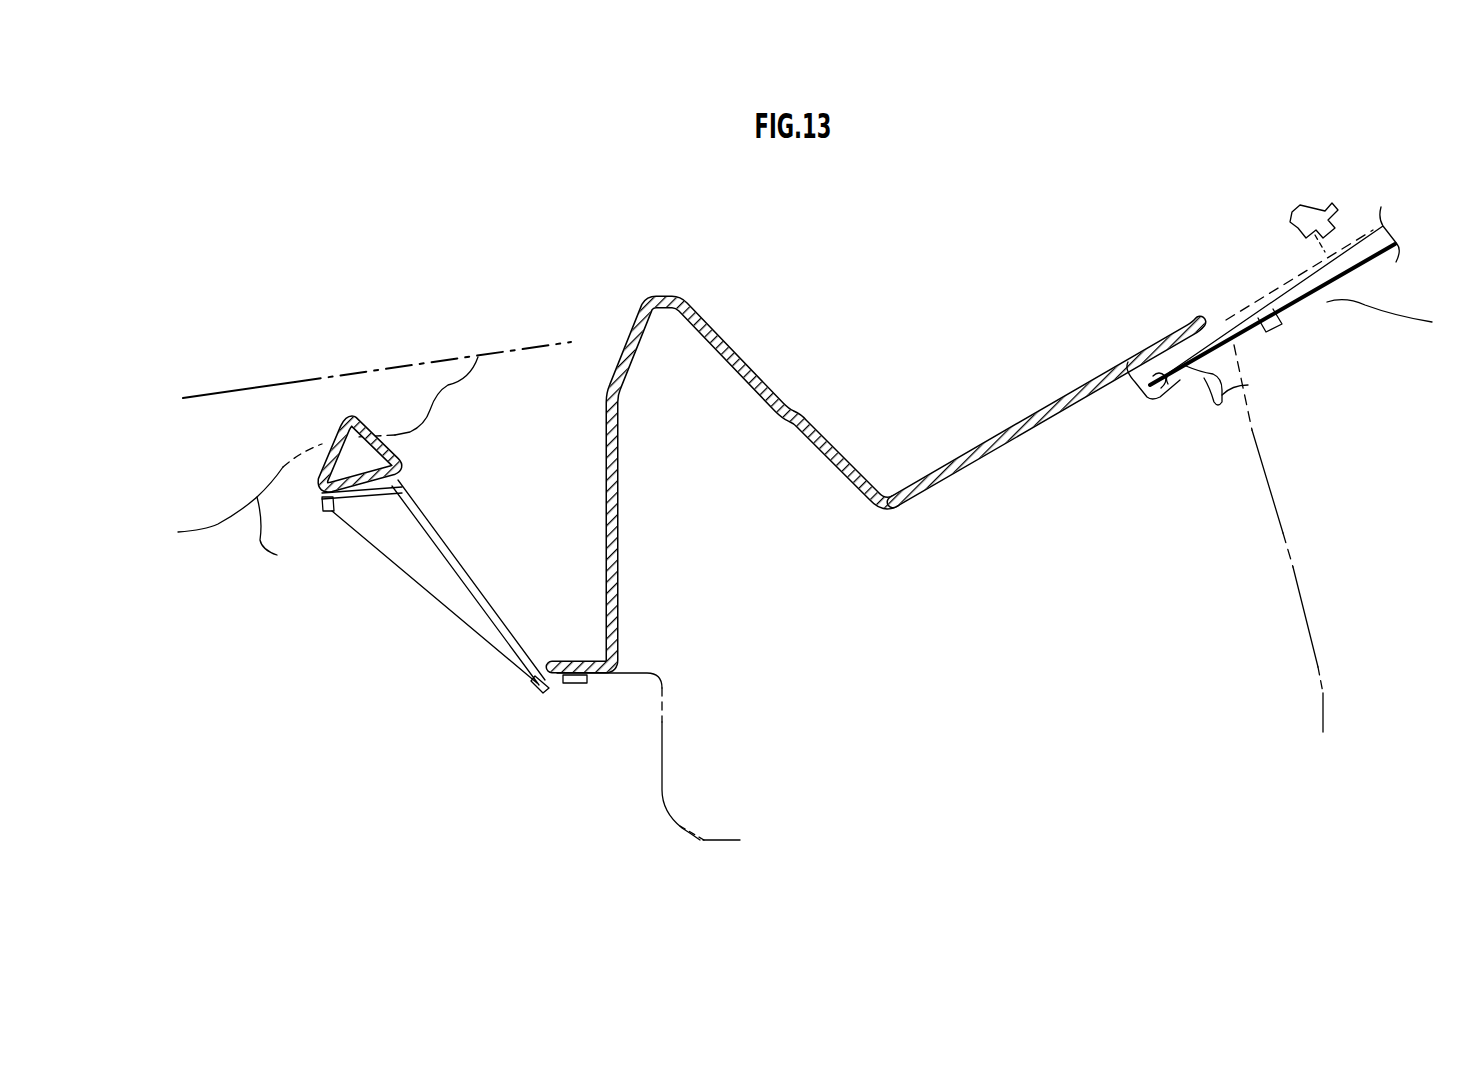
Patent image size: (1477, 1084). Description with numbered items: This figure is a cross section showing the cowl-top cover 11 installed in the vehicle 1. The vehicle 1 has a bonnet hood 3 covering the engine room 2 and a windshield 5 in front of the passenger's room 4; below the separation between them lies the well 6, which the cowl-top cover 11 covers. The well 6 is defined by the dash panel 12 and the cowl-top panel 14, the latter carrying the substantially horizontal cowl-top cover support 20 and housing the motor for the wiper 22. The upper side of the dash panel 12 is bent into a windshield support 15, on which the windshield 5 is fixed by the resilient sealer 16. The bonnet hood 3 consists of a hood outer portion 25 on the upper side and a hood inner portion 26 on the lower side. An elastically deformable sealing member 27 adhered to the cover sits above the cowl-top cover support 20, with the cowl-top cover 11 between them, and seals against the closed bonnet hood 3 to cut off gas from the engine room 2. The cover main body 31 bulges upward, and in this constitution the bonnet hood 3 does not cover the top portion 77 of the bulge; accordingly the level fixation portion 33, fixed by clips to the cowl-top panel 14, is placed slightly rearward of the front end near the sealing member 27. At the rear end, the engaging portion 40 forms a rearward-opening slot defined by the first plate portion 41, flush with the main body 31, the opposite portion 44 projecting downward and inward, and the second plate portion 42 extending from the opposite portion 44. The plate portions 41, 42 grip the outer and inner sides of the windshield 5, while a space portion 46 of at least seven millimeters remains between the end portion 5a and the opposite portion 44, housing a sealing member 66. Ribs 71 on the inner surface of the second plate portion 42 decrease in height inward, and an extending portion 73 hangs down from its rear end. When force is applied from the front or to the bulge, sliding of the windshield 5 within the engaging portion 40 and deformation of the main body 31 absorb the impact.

The vehicle 1 is at (720, 886).
The engine room 2 is at (238, 517).
The bonnet hood 3 is at (377, 352).
The passenger's room 4 is at (1388, 290).
The windshield 5 is at (1274, 259).
The end portion of the windshield 5a is at (1165, 452).
The well 6 is at (1046, 412).
The cowl-top cover 11 is at (982, 393).
The dash panel 12 is at (1308, 538).
The cowl-top panel 14 is at (636, 781).
The windshield support 15 is at (1314, 372).
The sealer 16 is at (1322, 335).
The cowl-top cover support 20 is at (609, 720).
The wiper 22 is at (1293, 192).
The hood outer portion 25 is at (361, 367).
The hood inner portion 26 is at (286, 537).
The sealing member 27 is at (430, 495).
The cover main body 31 is at (939, 412).
The fixation portion 33 is at (568, 636).
The engaging portion 40 is at (1173, 284).
The first plate portion 41 is at (1139, 308).
The second plate portion 42 is at (1217, 436).
The opposite portion 44 is at (1126, 407).
The space portion 46 is at (1105, 324).
The sealing member 66 is at (1131, 438).
The ribs 71 is at (1253, 396).
The extending portion 73 is at (1271, 428).
The top portion 77 is at (723, 441).